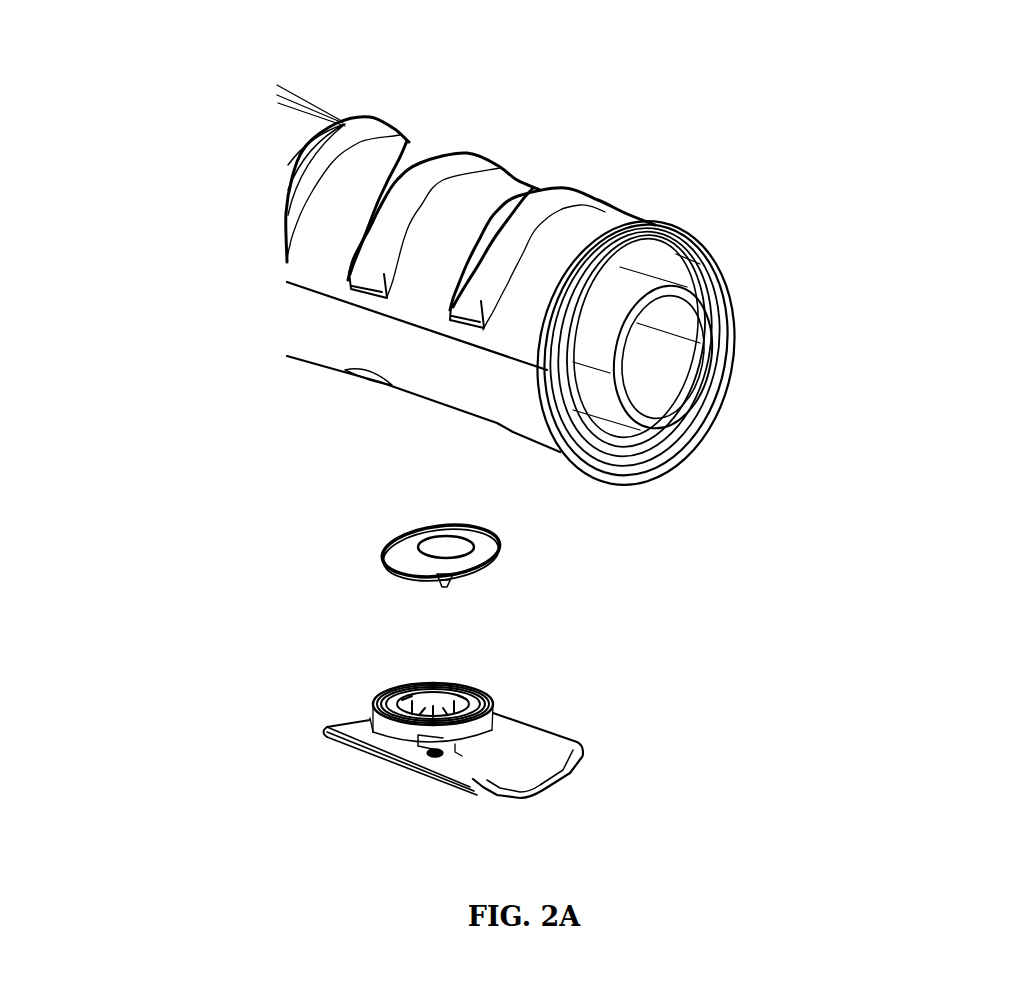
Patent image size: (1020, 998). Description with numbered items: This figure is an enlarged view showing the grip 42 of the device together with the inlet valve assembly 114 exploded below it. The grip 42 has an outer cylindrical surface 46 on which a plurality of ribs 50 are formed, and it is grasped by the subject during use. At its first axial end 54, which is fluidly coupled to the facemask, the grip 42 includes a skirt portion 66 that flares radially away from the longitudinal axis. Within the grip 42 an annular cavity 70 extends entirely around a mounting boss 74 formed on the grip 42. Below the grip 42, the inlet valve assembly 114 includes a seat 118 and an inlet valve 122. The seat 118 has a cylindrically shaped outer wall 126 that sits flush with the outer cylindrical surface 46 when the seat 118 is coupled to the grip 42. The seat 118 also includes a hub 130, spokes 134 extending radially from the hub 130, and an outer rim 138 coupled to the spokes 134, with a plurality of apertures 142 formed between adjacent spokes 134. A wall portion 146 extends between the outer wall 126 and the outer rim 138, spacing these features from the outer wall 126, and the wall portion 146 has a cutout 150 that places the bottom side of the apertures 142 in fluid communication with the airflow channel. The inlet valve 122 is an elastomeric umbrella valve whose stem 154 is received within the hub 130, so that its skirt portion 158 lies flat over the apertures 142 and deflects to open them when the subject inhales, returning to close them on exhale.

The grip 42 is at (438, 226).
The outer cylindrical surface 46 is at (305, 349).
The ribs 50 is at (338, 142).
The first axial end 54 is at (700, 307).
The skirt portion 66 is at (673, 220).
The cavity 70 is at (707, 255).
The mounting boss 74 is at (733, 285).
The inlet valve 122 is at (423, 563).
The skirt portion 158 is at (493, 557).
The stem 154 is at (450, 587).
The inlet valve assembly 114 is at (377, 748).
The seat 118 is at (467, 781).
The outer wall 126 is at (423, 757).
The hub 130 is at (441, 748).
The spokes 134 is at (413, 683).
The outer rim 138 is at (503, 716).
The apertures 142 is at (432, 690).
The wall portion 146 is at (367, 718).
The cutout 150 is at (467, 748).